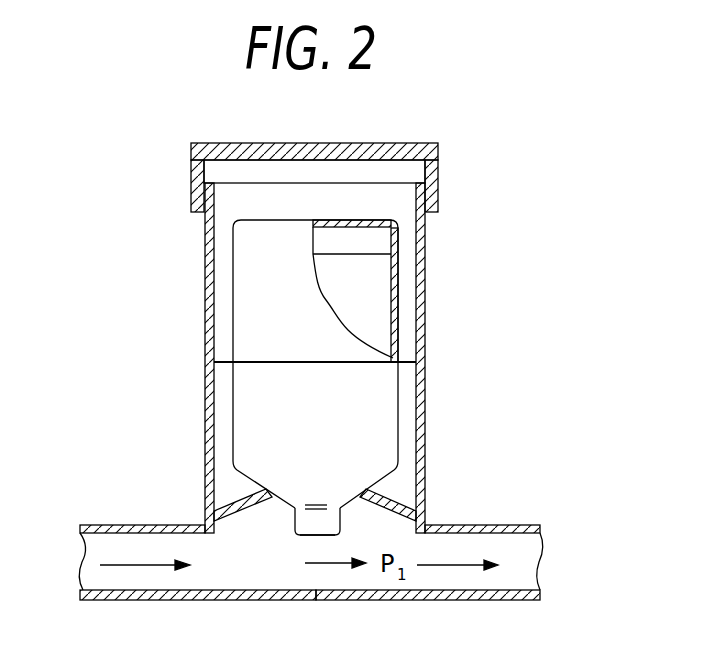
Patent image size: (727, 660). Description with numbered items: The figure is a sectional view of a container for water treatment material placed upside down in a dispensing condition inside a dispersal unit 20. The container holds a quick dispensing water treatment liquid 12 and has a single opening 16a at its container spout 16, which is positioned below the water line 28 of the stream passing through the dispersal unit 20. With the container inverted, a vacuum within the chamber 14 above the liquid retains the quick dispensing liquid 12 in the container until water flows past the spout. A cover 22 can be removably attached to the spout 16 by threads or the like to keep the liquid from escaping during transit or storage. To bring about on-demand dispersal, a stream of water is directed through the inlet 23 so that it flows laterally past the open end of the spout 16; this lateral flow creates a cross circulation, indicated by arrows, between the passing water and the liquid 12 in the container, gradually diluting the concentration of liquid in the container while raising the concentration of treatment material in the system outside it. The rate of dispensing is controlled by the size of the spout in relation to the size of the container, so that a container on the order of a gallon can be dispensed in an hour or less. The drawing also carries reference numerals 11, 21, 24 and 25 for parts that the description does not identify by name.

The dispersal unit 20 is at (376, 304).
The housing / cylinder 21 is at (427, 248).
The cover 22 is at (440, 168).
The flexible bag / container 11 is at (232, 307).
The quick dispensing water treatment liquid 12 is at (372, 300).
The chamber 14 is at (332, 236).
The water line 28 is at (412, 360).
The support struts 25 is at (228, 506).
The container spout 16 is at (341, 521).
The single opening 16a is at (305, 535).
The inlet 23 is at (152, 525).
The outlet pipe 24 is at (478, 525).